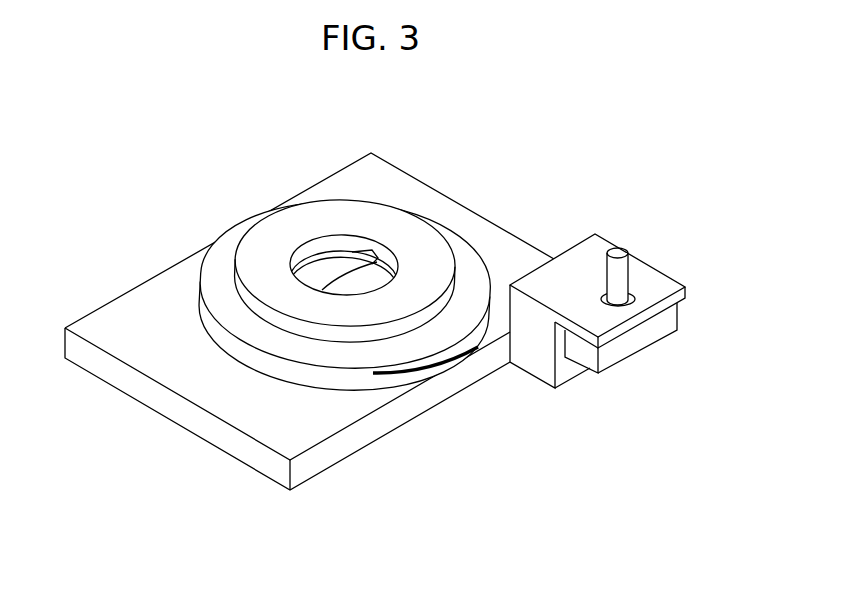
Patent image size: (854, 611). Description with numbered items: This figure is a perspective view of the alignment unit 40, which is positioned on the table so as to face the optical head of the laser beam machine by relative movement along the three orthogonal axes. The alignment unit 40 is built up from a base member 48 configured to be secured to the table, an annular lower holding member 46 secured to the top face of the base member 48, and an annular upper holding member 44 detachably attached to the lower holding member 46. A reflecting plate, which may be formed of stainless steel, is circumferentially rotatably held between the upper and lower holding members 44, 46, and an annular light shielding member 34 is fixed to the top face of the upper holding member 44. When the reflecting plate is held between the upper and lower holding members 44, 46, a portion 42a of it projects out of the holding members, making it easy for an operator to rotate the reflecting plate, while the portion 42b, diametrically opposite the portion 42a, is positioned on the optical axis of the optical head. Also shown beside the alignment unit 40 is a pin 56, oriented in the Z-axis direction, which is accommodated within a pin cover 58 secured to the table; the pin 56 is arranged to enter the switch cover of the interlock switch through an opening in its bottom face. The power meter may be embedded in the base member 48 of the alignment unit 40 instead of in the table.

The alignment unit 40 is at (284, 152).
The annular light shielding member 34 is at (413, 240).
The annular upper holding member 44 is at (463, 262).
The annular lower holding member 46 is at (283, 376).
The base member 48 is at (120, 326).
The projecting portion of the reflecting plate 42a is at (452, 352).
The portion of the reflecting plate diametrically opposite the projecting portion 42b is at (357, 286).
The pin 56 is at (619, 250).
The pin cover 58 is at (572, 270).